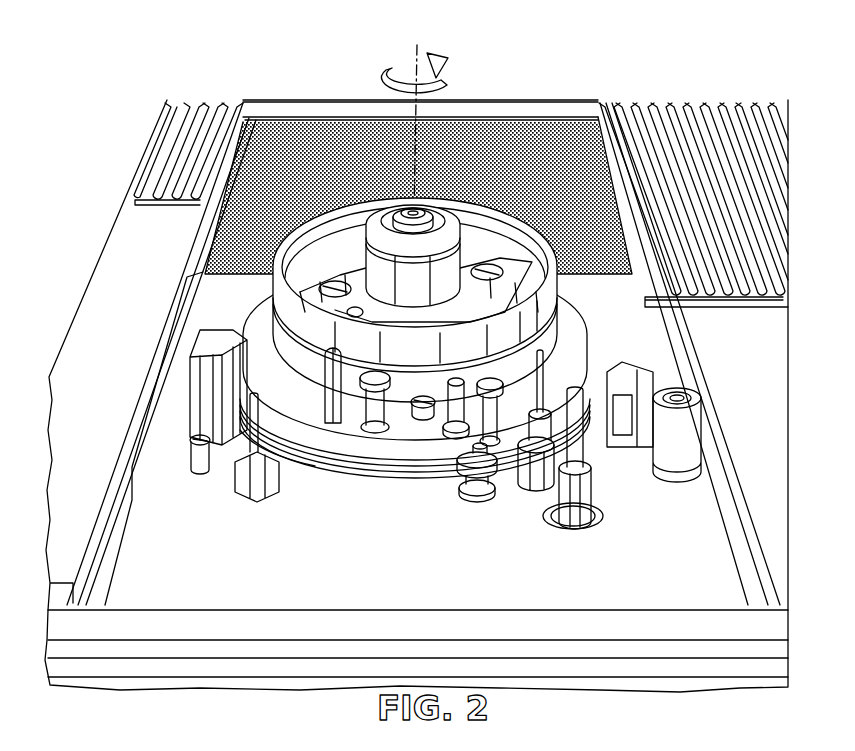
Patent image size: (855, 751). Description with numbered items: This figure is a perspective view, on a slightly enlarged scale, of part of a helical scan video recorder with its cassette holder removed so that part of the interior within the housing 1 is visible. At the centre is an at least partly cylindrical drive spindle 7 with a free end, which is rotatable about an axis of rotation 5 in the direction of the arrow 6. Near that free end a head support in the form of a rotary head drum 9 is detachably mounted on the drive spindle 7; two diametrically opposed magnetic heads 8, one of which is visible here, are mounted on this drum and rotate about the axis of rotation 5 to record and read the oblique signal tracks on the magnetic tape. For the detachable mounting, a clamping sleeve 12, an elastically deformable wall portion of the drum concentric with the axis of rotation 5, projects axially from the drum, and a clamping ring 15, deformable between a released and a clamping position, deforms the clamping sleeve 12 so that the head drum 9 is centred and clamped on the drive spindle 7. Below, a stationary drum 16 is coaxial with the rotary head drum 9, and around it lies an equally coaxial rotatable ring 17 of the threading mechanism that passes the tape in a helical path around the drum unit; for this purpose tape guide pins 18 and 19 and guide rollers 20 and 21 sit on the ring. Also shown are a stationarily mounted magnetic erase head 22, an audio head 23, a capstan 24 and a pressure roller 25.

The housing 1 is at (143, 258).
The axis of rotation 5 is at (405, 62).
The arrow 6 is at (450, 86).
The drive spindle 7 is at (418, 210).
The magnetic head 8 is at (268, 318).
The rotary head drum 9 is at (560, 262).
The clamping sleeve 12 is at (400, 207).
The clamping ring 15 is at (452, 220).
The stationary drum 16 is at (397, 410).
The rotatable ring 17 is at (343, 430).
The tape guide pin 18 is at (318, 407).
The tape guide pin 19 is at (433, 423).
The guide roller 20 is at (365, 410).
The guide roller 21 is at (503, 450).
The magnetic erase head 22 is at (240, 373).
The audio head 23 is at (648, 374).
The capstan 24 is at (583, 440).
The pressure roller 25 is at (680, 398).